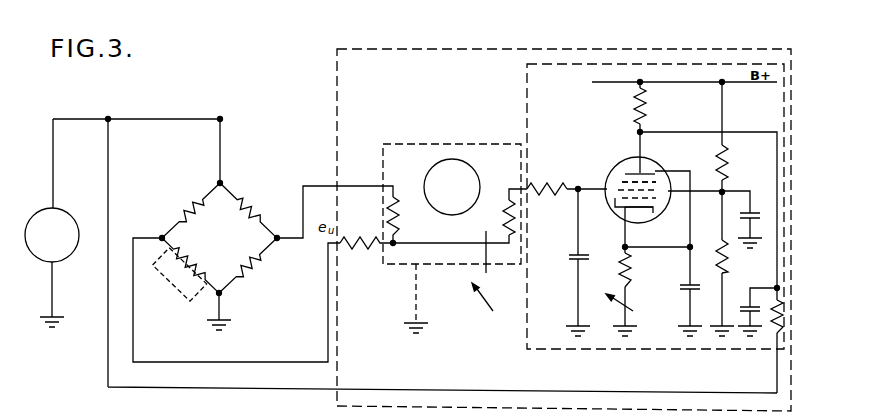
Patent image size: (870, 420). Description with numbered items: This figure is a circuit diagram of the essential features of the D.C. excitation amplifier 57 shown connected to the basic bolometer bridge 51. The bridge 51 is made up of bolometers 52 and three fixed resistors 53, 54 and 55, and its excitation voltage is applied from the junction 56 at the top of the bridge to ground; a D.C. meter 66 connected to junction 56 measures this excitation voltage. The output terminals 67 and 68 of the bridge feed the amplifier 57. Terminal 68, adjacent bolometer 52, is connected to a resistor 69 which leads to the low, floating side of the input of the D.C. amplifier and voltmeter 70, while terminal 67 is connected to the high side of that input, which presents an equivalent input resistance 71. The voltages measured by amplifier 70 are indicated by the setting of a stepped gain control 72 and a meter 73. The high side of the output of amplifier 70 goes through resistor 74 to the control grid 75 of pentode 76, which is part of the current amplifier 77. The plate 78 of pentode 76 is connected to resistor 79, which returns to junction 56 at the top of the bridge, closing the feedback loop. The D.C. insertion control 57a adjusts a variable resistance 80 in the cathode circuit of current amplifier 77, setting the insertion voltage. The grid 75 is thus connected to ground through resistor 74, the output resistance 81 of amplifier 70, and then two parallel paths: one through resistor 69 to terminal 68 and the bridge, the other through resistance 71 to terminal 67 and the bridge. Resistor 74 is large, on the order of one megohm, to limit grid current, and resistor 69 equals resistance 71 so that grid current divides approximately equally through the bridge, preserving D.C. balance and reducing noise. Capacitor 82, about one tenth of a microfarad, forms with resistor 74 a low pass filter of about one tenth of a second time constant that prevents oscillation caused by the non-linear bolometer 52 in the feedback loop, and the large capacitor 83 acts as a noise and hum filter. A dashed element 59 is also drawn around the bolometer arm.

The bolometer bridge 51 is at (229, 249).
The bolometers 52 is at (168, 292).
The fixed resistor 53 is at (197, 195).
The fixed resistor 54 is at (249, 197).
The fixed resistor 55 is at (256, 264).
The junction 56 is at (222, 119).
The D.C. excitation amplifier 57 is at (532, 43).
The D.C. insertion control 57a is at (658, 289).
The temperature sensitive element 59 is at (160, 275).
The D.C. meter 66 is at (45, 212).
The output terminal 67 is at (279, 224).
The output terminal 68 is at (163, 233).
The resistor 69 is at (363, 246).
The D.C. amplifier and voltmeter 70 is at (438, 137).
The equivalent input resistance 71 is at (398, 214).
The stepped gain control 72 is at (483, 284).
The meter 73 is at (452, 215).
The resistor 74 is at (545, 188).
The control grid 75 is at (613, 207).
The pentode 76 is at (633, 161).
The current amplifier 77 is at (519, 82).
The plate 78 is at (622, 177).
The resistor 79 is at (770, 322).
The variable resistance 80 is at (614, 291).
The output resistance 81 is at (505, 205).
The capacitor 82 is at (573, 262).
The capacitor 83 is at (748, 299).